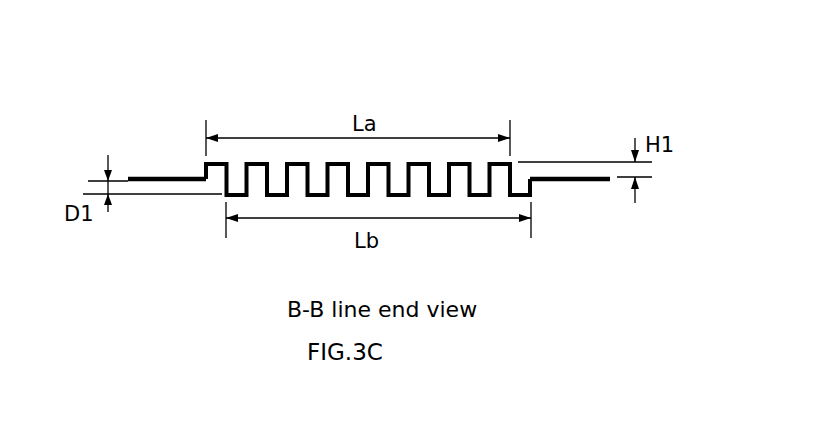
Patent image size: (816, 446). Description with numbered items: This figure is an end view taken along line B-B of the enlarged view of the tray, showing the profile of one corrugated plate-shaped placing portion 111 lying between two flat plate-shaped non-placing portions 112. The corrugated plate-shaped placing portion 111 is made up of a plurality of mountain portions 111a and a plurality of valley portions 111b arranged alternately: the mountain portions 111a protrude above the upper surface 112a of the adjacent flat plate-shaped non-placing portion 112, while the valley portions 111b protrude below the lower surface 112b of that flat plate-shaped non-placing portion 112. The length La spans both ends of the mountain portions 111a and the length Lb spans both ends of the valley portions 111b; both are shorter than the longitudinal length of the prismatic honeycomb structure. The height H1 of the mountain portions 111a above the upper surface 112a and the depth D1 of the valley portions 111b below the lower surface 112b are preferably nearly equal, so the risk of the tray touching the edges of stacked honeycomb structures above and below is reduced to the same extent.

The corrugated plate-shaped placing portion 111 is at (532, 88).
The mountain portions 111a is at (457, 161).
The valley portions 111b is at (277, 198).
The flat plate-shaped non-placing portion 112 is at (207, 88).
The upper surface 112a is at (160, 177).
The lower surface 112b is at (178, 182).